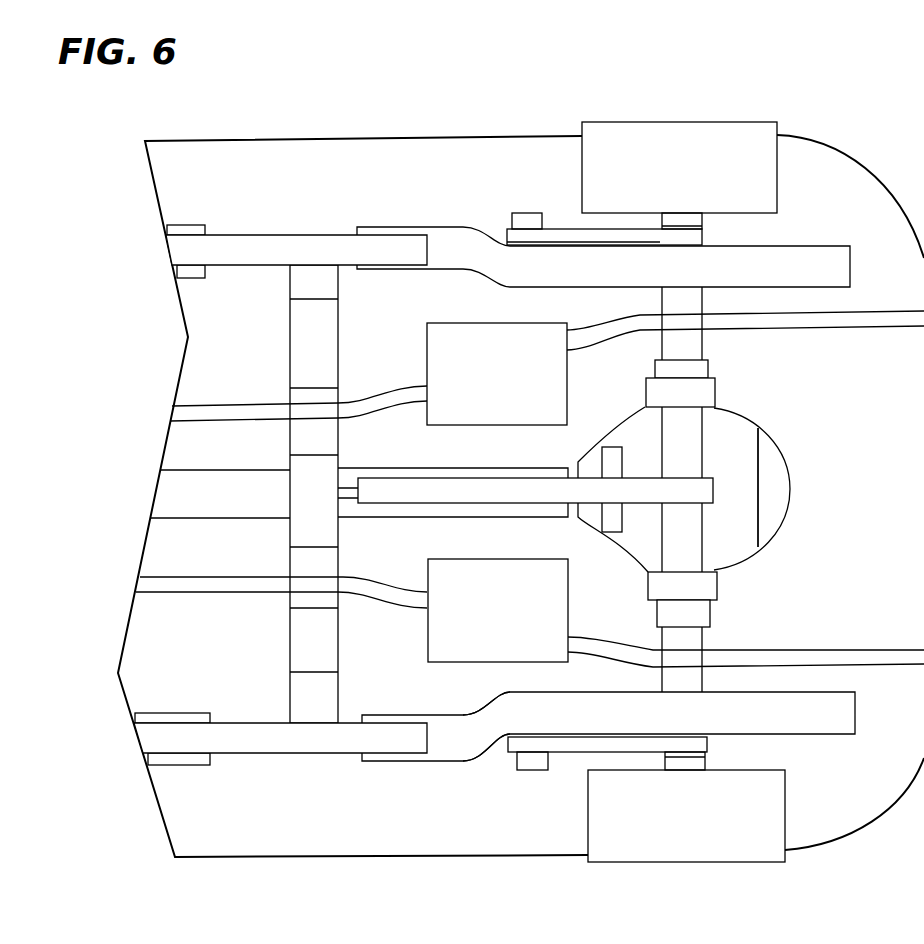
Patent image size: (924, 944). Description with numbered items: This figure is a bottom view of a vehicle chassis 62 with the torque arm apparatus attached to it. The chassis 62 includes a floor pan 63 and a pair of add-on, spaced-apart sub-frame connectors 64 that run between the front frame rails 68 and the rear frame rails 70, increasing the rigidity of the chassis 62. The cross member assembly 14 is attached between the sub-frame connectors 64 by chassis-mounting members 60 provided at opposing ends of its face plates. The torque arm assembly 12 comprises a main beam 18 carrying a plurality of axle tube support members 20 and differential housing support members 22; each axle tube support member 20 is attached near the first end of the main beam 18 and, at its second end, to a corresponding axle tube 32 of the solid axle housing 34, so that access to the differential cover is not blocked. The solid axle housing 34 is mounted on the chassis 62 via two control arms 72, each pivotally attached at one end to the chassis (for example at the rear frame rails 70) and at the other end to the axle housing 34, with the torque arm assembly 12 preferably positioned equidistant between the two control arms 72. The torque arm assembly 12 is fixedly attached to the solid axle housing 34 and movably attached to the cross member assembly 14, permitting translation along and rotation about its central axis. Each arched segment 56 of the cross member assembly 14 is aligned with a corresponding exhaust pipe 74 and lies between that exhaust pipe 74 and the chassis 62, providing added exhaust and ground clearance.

The torque arm assembly 12 is at (472, 504).
The cross member assembly 14 is at (341, 326).
The main beam 18 is at (485, 492).
The axle tube support members 20 is at (695, 423).
The differential housing support members 22 is at (615, 457).
The axle tube 32 is at (688, 342).
The solid axle housing 34 is at (786, 488).
The arched segments 56 is at (307, 565).
The chassis-mounting members 60 is at (303, 284).
The vehicle chassis 62 is at (202, 373).
The floor pan 63 is at (617, 492).
The sub-frame connectors 64 is at (330, 250).
The front frame rails 68 is at (162, 762).
The rear frame rails 70 is at (465, 743).
The control arms 72 is at (575, 745).
The exhaust pipe 74 is at (274, 407).